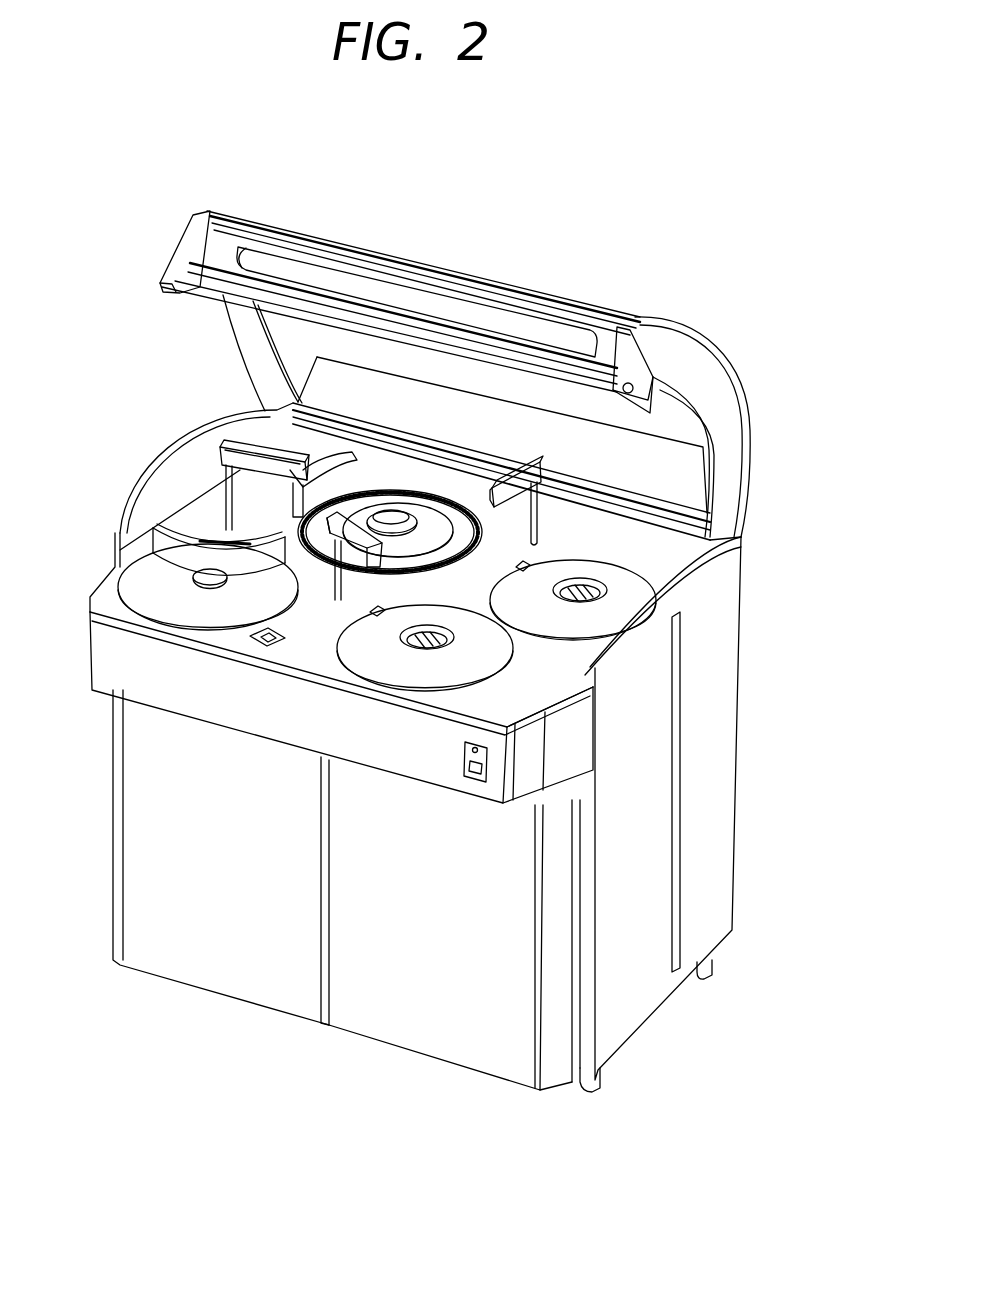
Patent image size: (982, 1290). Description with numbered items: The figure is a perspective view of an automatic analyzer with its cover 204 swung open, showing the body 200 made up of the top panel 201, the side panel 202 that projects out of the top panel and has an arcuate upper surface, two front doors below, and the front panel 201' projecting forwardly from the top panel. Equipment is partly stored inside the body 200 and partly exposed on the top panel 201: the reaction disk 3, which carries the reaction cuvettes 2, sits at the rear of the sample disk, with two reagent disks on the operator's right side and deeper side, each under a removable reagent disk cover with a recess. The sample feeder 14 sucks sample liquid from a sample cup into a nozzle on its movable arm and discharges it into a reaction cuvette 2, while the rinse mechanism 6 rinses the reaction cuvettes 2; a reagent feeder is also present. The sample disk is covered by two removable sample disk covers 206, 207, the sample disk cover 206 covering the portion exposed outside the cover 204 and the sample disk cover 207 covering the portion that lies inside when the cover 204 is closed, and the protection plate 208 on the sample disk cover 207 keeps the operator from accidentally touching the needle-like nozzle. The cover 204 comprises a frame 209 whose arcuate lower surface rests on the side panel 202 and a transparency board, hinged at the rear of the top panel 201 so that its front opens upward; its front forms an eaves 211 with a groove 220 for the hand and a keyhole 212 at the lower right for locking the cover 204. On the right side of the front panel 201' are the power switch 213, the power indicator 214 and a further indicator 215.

The reaction cuvettes 2 is at (447, 497).
The reaction disk 3 is at (398, 505).
The rinse mechanism 6 is at (273, 440).
The sample feeder 14 is at (275, 470).
The body 200 is at (745, 580).
The top panel 201 is at (415, 636).
The front panel 201' is at (341, 710).
The side panel 202 is at (722, 742).
The cover 204 is at (500, 290).
The sample disk cover 206 is at (137, 590).
The sample disk cover 207 is at (270, 595).
The protection plate 208 is at (165, 540).
The frame 209 is at (720, 365).
The eaves 211 is at (186, 238).
The keyhole 212 is at (640, 385).
The power switch 213 is at (470, 778).
The power indicator 214 is at (463, 752).
The indicator 215 is at (262, 640).
The groove 220 is at (390, 290).